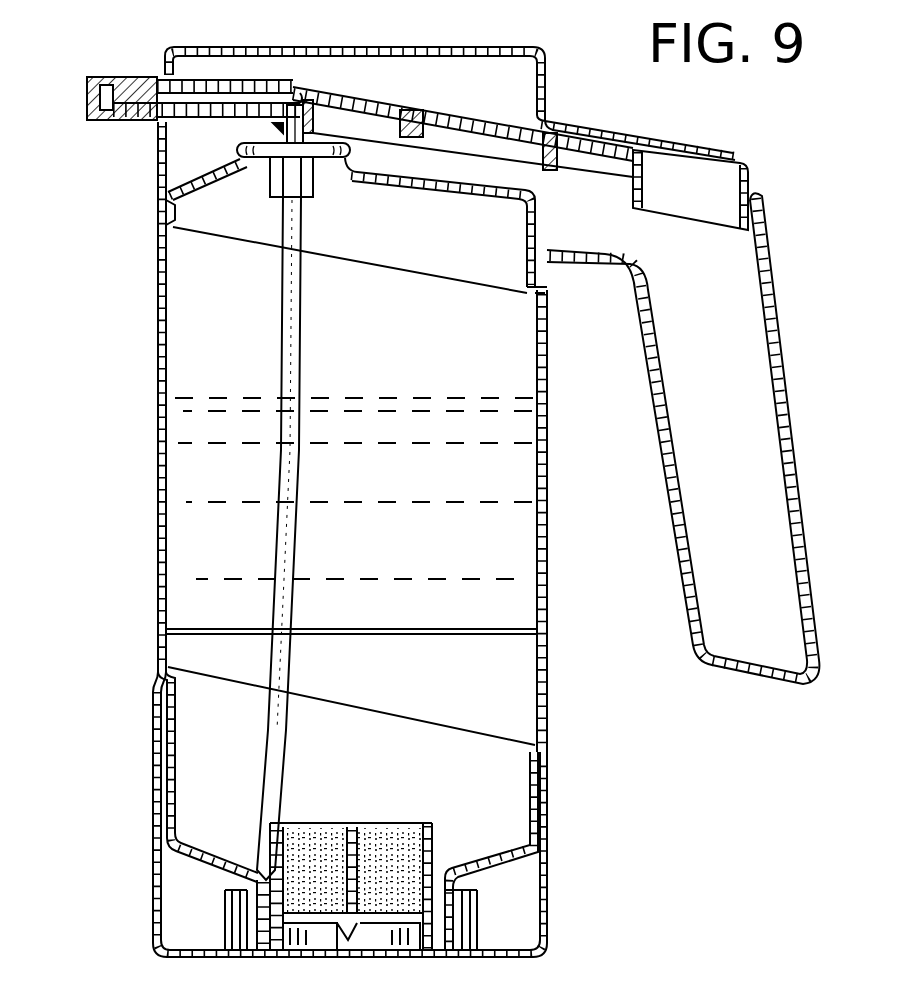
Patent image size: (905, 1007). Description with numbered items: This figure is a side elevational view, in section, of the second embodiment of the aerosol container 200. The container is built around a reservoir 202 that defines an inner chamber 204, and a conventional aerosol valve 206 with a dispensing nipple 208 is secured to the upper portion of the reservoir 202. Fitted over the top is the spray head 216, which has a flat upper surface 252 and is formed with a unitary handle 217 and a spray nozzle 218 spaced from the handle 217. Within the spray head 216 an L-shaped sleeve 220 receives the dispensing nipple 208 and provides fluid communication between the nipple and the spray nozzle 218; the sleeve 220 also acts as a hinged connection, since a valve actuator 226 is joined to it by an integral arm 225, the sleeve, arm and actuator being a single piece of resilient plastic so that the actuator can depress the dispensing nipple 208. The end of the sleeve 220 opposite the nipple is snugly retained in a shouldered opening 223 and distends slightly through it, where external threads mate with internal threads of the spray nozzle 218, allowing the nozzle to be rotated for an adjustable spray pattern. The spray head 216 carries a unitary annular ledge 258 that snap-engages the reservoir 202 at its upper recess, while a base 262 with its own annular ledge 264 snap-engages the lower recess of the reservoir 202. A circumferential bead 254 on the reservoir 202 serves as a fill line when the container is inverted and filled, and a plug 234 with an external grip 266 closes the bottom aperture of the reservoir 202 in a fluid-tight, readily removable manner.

The aerosol container 200 is at (118, 566).
The reservoir 202 is at (157, 373).
The inner chamber 204 is at (244, 346).
The aerosol valve 206 is at (243, 152).
The dispensing nipple 208 is at (292, 102).
The spray head 216 is at (550, 108).
The handle 217 is at (775, 293).
The spray nozzle 218 is at (93, 78).
The L-shaped sleeve 220 is at (327, 130).
The shouldered opening 223 is at (156, 74).
The arm 225 is at (573, 178).
The valve actuator 226 is at (725, 162).
The plug 234 is at (432, 838).
The flat upper surface 252 is at (226, 12).
The circumferential bead 254 is at (547, 633).
The annular ledge 258 is at (547, 298).
The base 262 is at (157, 886).
The annular ledge 264 is at (542, 749).
The external grip 266 is at (360, 924).